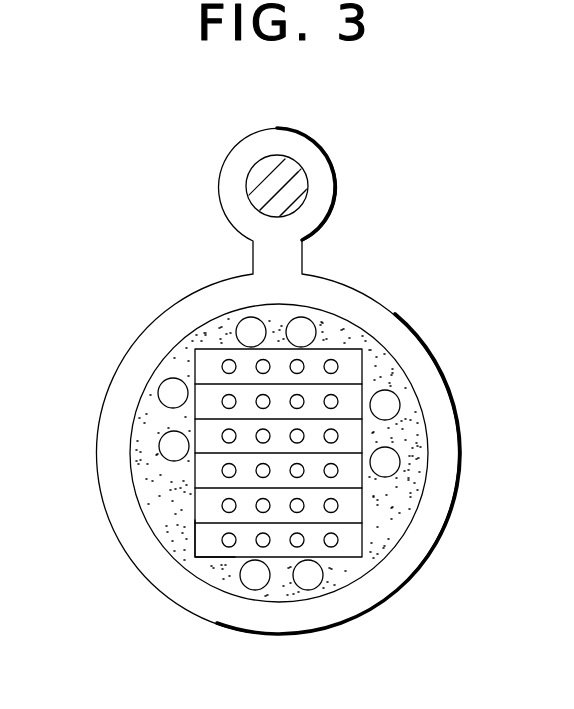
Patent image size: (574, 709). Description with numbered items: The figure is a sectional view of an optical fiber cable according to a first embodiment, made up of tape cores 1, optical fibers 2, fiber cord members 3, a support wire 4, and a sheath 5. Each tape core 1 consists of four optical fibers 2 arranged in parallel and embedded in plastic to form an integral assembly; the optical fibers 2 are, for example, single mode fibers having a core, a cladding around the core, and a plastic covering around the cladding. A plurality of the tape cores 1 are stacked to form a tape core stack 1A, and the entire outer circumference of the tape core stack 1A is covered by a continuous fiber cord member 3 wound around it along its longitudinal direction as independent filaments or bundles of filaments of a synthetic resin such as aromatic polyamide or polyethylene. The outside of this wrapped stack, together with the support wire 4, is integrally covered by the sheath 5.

The tape core 1 is at (363, 355).
The tape core stack 1A is at (219, 566).
The optical fiber 2 is at (333, 360).
The fiber cord member 3 is at (158, 448).
The support wire 4 is at (307, 183).
The sheath 5 is at (428, 515).